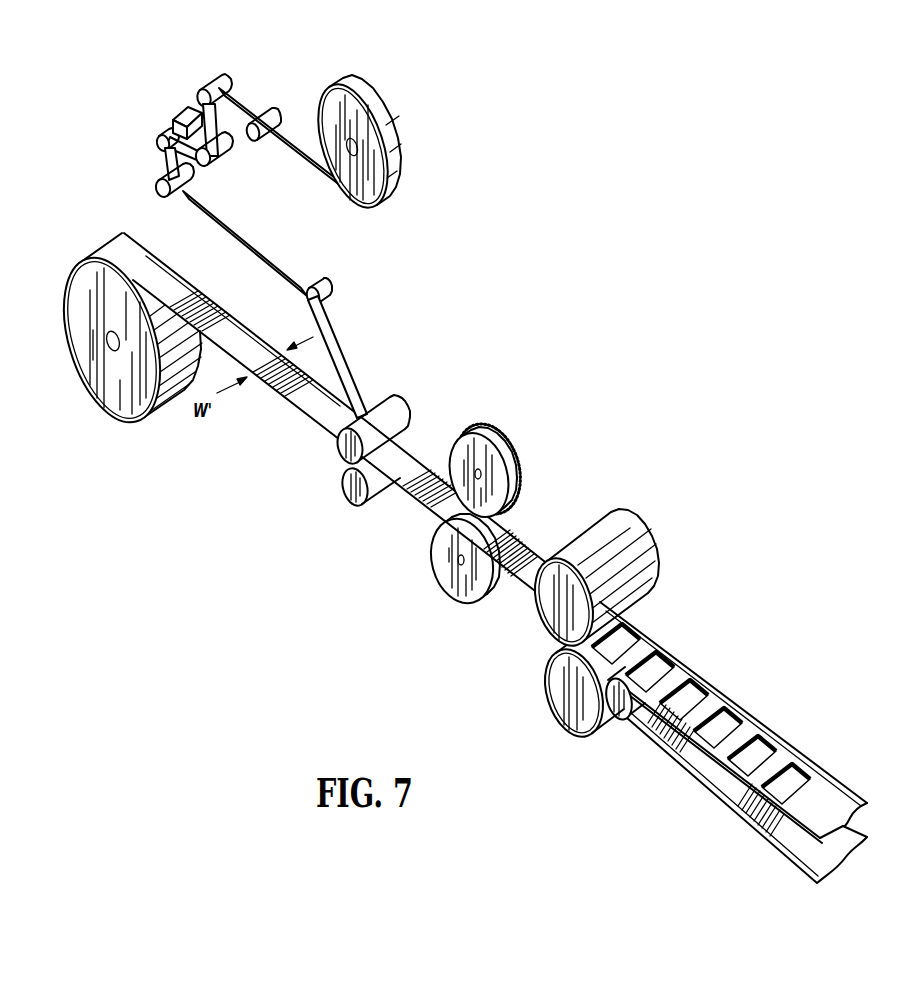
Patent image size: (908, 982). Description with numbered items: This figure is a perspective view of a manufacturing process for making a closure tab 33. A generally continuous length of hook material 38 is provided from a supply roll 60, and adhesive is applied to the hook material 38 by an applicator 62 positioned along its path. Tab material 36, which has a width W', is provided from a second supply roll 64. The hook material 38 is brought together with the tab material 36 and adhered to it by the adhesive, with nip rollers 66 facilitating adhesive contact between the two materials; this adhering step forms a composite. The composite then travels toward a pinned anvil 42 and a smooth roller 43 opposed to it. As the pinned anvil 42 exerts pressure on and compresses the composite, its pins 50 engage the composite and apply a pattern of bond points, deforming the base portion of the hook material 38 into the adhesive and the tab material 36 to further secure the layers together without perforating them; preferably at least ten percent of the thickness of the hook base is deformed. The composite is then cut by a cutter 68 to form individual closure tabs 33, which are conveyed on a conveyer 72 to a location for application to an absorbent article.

The closure tab 33 is at (690, 703).
The tab material 36 is at (330, 430).
The hook material 38 is at (340, 348).
The pinned anvil 42 is at (428, 494).
The smooth roller 43 is at (470, 598).
The pins 50 is at (514, 452).
The supply roll 60 is at (341, 95).
The applicator 62 is at (189, 110).
The supply roll 64 is at (112, 388).
The nip rollers 66 is at (398, 405).
The cutter 68 is at (662, 636).
The conveyer 72 is at (755, 730).